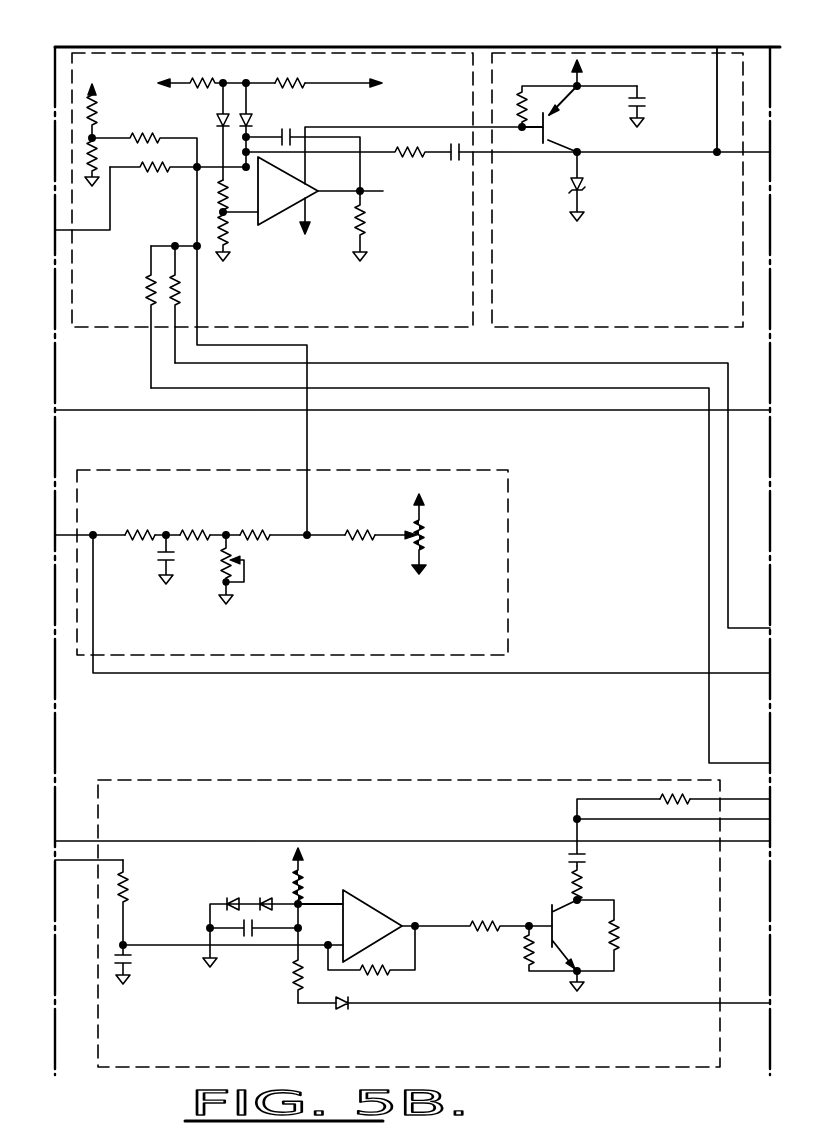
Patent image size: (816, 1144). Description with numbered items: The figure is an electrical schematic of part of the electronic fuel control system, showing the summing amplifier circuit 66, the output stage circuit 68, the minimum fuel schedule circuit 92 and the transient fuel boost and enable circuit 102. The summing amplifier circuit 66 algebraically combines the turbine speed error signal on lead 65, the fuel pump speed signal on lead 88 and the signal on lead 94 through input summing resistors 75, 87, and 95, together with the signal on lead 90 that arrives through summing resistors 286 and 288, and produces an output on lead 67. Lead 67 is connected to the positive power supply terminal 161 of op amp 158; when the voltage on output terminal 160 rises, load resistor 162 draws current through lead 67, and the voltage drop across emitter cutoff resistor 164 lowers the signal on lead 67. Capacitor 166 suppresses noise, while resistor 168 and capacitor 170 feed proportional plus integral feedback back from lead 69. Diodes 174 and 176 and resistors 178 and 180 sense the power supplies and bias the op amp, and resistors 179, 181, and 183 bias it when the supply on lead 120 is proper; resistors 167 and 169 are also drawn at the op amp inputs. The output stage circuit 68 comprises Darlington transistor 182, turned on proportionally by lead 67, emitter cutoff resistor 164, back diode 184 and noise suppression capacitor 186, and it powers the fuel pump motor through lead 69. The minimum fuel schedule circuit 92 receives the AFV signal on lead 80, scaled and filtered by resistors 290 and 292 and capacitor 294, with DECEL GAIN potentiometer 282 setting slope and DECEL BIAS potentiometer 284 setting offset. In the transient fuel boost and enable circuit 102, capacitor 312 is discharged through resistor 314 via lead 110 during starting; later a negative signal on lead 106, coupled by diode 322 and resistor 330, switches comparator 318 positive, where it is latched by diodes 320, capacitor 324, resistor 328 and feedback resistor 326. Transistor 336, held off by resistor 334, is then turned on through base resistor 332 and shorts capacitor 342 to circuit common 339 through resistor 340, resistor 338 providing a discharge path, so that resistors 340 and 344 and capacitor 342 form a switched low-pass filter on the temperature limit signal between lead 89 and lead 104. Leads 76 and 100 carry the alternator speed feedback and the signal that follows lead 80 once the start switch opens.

The lead 65 is at (118, 200).
The summing amplifier circuit 66 is at (405, 330).
The lead 67 is at (480, 127).
The output stage circuit 68 is at (545, 330).
The lead 69 is at (526, 153).
The input summing resistor 75 is at (150, 177).
The lead 76 is at (80, 409).
The lead 80 is at (106, 530).
The input summing resistor 87 is at (180, 293).
The lead 88 is at (216, 368).
The lead 89 is at (740, 792).
The lead 90 is at (302, 344).
The minimum fuel schedule circuit 92 is at (508, 597).
The lead 94 is at (150, 344).
The input summing resistor 95 is at (146, 285).
The lead 100 is at (78, 840).
The transient fuel boost and enable circuit 102 is at (590, 1068).
The lead 104 is at (672, 810).
The lead 106 is at (736, 998).
The lead 110 is at (84, 867).
The lead 120 is at (572, 48).
The op amp 158 is at (300, 233).
The output terminal 160 is at (368, 191).
The positive power supply terminal 161 is at (300, 183).
The load resistor 162 is at (366, 218).
The emitter cutoff resistor 164 is at (518, 92).
The capacitor 166 is at (290, 129).
The resistor 167 is at (218, 199).
The resistor 168 is at (408, 162).
The resistor 169 is at (226, 238).
The capacitor 170 is at (456, 162).
The diode 174 is at (216, 112).
The diode 176 is at (256, 110).
The resistor 178 is at (205, 83).
The resistor 179 is at (96, 113).
The resistor 180 is at (304, 80).
The resistor 181 is at (92, 153).
The Darlington transistor 182 is at (556, 122).
The resistor 183 is at (150, 135).
The diode 184 is at (588, 194).
The capacitor 186 is at (640, 96).
The DECEL GAIN potentiometer 282 is at (210, 570).
The DECEL BIAS potentiometer 284 is at (412, 542).
The resistor 286 is at (256, 527).
The resistor 288 is at (356, 528).
The resistor 290 is at (144, 527).
The resistor 292 is at (190, 528).
The capacitor 294 is at (154, 562).
The capacitor 312 is at (128, 968).
The resistor 314 is at (128, 885).
The comparator 318 is at (368, 896).
The diodes 320 is at (264, 895).
The diode 322 is at (340, 1010).
The capacitor 324 is at (252, 933).
The feedback resistor 326 is at (374, 972).
The resistor 328 is at (306, 882).
The resistor 330 is at (288, 984).
The base resistor 332 is at (496, 918).
The resistor 334 is at (524, 962).
The transistor 336 is at (566, 902).
The resistor 338 is at (620, 932).
The circuit common 339 is at (584, 980).
The resistor 340 is at (584, 880).
The capacitor 342 is at (584, 850).
The resistor 344 is at (676, 798).